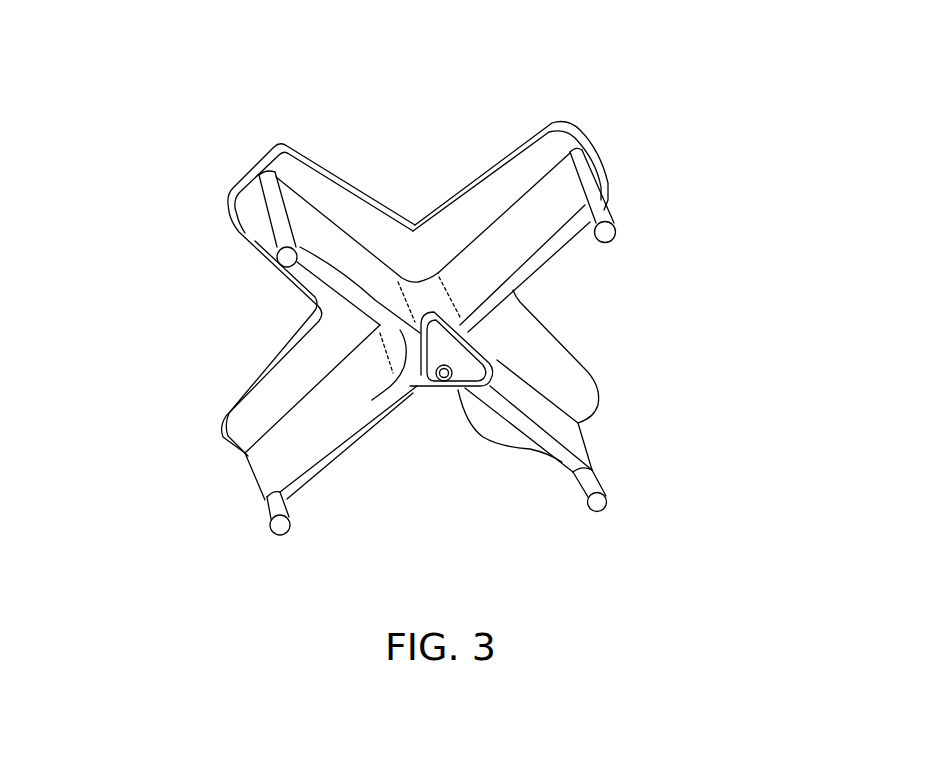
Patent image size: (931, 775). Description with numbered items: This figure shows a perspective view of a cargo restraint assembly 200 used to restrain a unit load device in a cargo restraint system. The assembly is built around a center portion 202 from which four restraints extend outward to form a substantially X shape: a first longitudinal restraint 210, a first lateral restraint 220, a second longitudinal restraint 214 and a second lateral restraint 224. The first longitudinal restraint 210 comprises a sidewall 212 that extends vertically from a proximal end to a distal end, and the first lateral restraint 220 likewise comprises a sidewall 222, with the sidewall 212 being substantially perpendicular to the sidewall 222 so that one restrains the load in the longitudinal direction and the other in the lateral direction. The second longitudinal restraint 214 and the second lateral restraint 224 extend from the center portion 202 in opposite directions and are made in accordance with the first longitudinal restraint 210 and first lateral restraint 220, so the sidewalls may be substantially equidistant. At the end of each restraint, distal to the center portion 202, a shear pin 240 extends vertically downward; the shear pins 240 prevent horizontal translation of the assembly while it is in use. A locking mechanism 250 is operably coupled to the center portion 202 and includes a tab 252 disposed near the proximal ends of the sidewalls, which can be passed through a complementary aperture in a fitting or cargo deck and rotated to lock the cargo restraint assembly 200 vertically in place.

The cargo restraint assembly 200 is at (160, 135).
The center portion 202 is at (428, 292).
The first longitudinal restraint 210 is at (560, 427).
The sidewall 212 is at (523, 400).
The second longitudinal restraint 214 is at (348, 247).
The first lateral restraint 220 is at (511, 283).
The sidewall 222 is at (512, 237).
The second lateral restraint 224 is at (337, 410).
The shear pins 240 is at (277, 215).
The locking mechanism 250 is at (437, 357).
The tab 252 is at (472, 363).